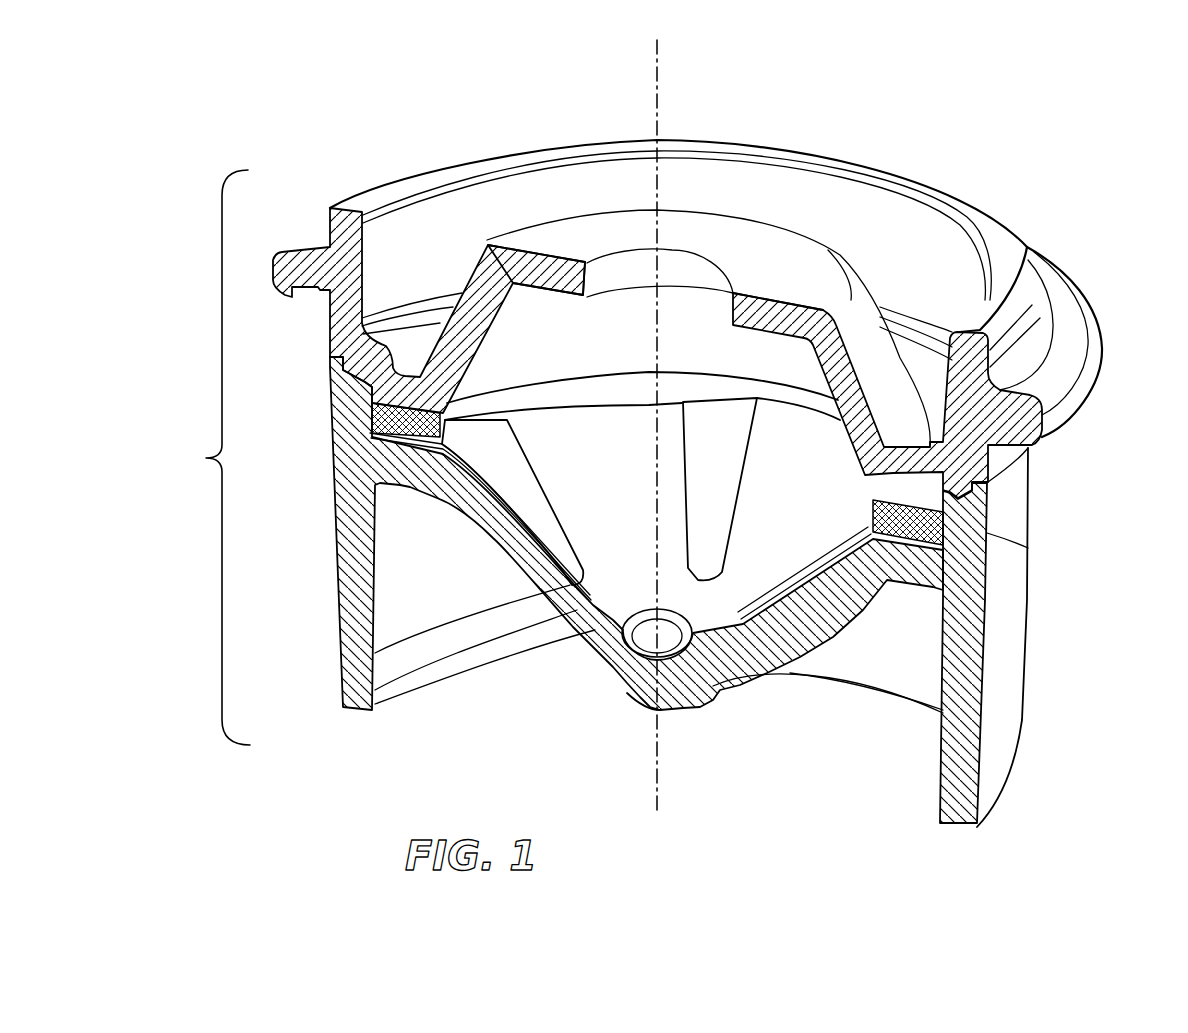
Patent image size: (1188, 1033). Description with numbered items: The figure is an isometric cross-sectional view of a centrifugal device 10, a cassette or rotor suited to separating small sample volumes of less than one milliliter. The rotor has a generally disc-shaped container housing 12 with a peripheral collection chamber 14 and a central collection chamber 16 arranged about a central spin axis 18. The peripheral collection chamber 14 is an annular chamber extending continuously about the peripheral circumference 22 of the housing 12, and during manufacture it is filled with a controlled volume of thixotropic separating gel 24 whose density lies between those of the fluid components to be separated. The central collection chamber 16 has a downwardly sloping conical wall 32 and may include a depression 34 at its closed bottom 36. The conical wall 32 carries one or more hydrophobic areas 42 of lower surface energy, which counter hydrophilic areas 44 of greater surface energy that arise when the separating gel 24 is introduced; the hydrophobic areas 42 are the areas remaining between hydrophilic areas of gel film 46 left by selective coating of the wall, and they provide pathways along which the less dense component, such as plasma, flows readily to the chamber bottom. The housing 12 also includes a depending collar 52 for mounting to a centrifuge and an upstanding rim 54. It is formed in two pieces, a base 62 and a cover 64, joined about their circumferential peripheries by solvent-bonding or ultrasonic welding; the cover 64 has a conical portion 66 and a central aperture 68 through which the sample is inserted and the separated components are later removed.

The centrifugal device 10 is at (385, 140).
The container housing 12 is at (210, 457).
The peripheral collection chamber 14 is at (374, 418).
The central collection chamber 16 is at (617, 600).
The central spin axis 18 is at (652, 47).
The peripheral circumference 22 is at (1030, 490).
The thixotropic separating gel 24 is at (693, 385).
The conical wall 32 is at (627, 440).
The depression 34 is at (706, 660).
The closed bottom 36 is at (633, 690).
The hydrophobic area 42 is at (704, 485).
The hydrophilic area 44 is at (599, 491).
The gel film 46 is at (492, 455).
The depending collar 52 is at (1003, 695).
The upstanding rim 54 is at (985, 217).
The base 62 is at (410, 553).
The cover 64 is at (778, 280).
The conical portion 66 is at (873, 367).
The central aperture 68 is at (612, 265).